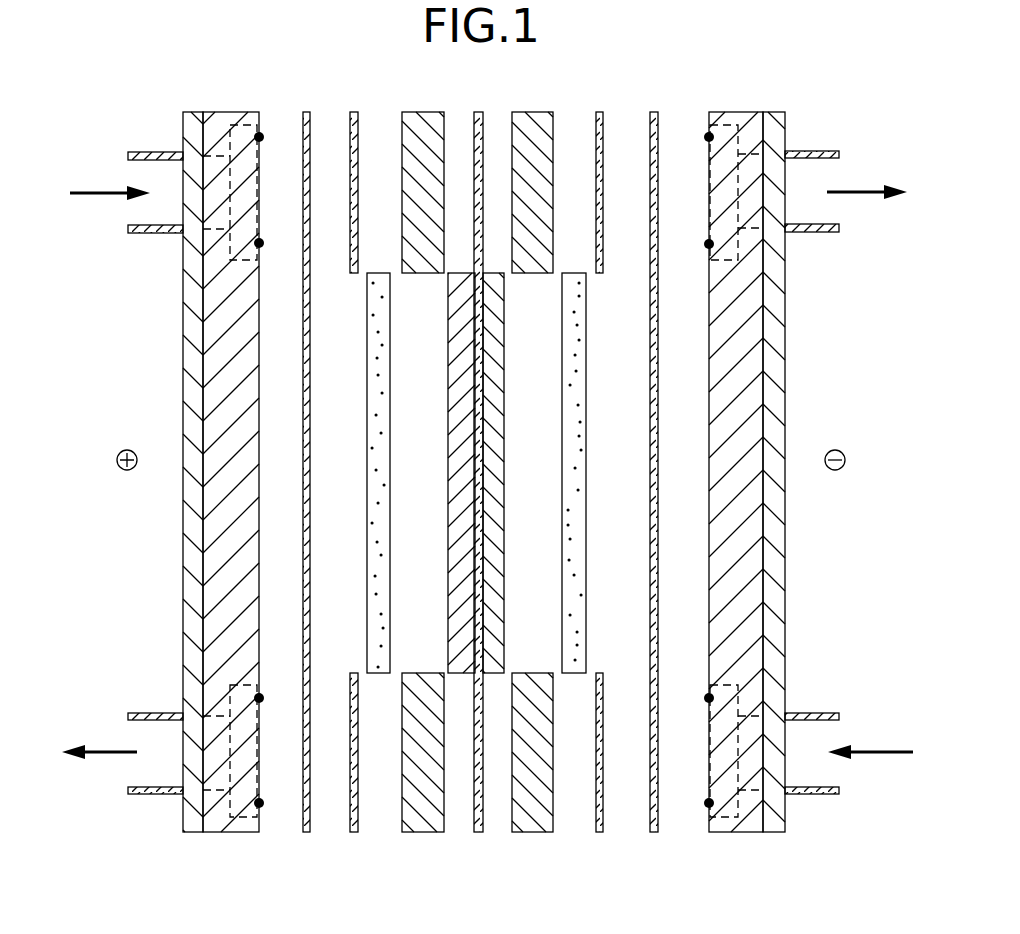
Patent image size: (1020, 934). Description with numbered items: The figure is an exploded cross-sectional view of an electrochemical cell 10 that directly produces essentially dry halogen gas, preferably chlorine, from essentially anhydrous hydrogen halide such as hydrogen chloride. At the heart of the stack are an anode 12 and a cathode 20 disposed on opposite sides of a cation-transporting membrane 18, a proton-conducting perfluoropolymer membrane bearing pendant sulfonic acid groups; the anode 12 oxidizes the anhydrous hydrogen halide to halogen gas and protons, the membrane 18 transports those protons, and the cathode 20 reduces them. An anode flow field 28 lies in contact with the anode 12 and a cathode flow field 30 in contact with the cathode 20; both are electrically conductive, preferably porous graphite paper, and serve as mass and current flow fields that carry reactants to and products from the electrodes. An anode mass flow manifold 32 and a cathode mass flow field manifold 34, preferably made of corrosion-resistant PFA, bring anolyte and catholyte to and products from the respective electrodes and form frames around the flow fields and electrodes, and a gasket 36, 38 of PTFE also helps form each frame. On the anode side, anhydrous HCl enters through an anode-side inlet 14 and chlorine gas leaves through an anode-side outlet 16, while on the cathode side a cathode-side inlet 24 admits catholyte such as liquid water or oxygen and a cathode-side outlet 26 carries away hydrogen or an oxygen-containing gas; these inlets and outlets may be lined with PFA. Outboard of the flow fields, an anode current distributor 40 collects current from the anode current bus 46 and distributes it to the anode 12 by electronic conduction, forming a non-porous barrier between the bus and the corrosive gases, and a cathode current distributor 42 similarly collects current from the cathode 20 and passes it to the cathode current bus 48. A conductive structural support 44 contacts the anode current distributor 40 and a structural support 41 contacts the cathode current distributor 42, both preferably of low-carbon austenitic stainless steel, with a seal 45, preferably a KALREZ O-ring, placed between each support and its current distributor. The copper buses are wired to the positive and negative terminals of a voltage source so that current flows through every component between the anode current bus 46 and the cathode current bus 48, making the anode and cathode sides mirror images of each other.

The electrochemical cell 10 is at (183, 36).
The anode 12 is at (470, 381).
The anode-side inlet 14 is at (156, 151).
The anode-side outlet 16 is at (156, 712).
The cation-transporting membrane 18 is at (478, 832).
The cathode 20 is at (485, 380).
The cathode-side inlet 24 is at (818, 712).
The cathode-side outlet 26 is at (806, 150).
The anode flow field 28 is at (375, 560).
The cathode flow field 30 is at (577, 560).
The anode mass flow manifold 32 is at (426, 112).
The cathode mass flow field manifold 34 is at (532, 112).
The gasket 36 is at (354, 112).
The gasket 38 is at (599, 112).
The anode current distributor 40 is at (306, 832).
The structural support 41 is at (752, 832).
The cathode current distributor 42 is at (654, 112).
The conductive structural support 44 is at (226, 832).
The seal 45 is at (262, 134).
The anode current bus 46 is at (195, 832).
The cathode current bus 48 is at (772, 832).